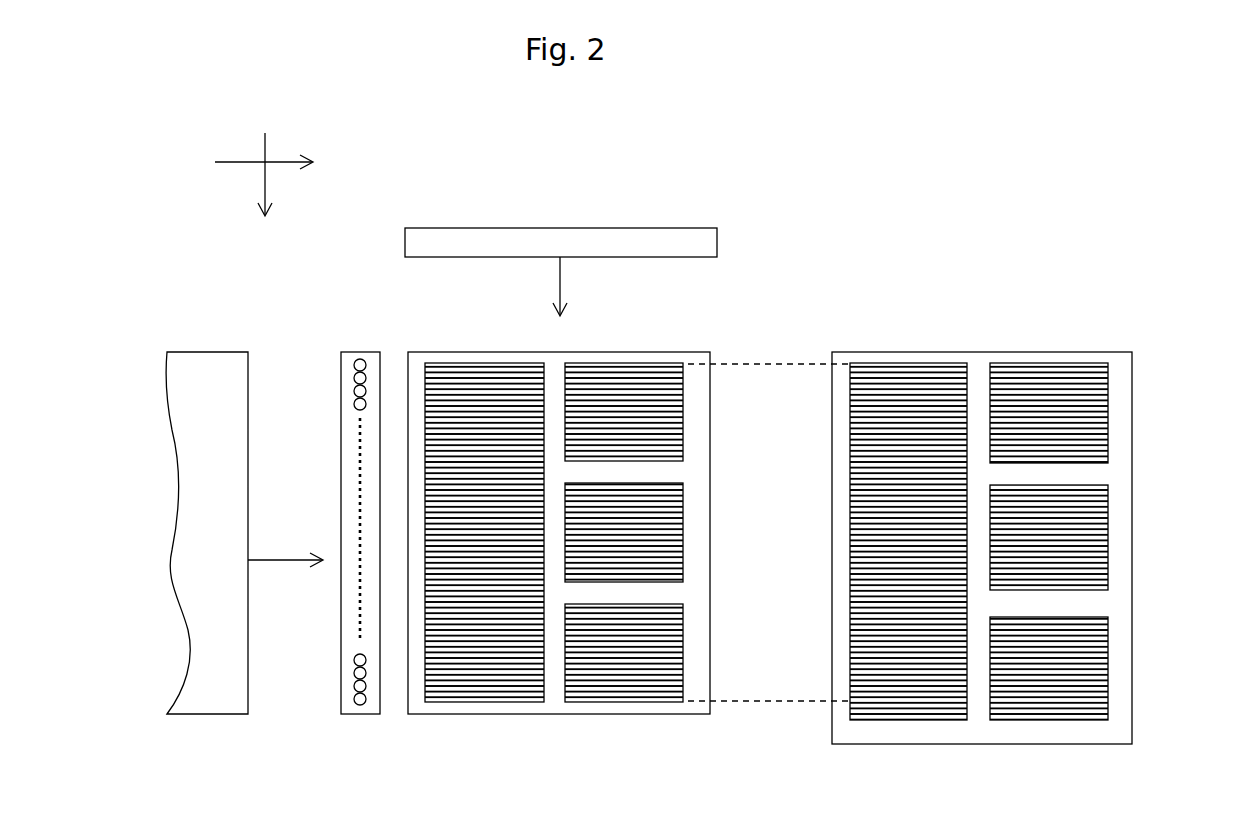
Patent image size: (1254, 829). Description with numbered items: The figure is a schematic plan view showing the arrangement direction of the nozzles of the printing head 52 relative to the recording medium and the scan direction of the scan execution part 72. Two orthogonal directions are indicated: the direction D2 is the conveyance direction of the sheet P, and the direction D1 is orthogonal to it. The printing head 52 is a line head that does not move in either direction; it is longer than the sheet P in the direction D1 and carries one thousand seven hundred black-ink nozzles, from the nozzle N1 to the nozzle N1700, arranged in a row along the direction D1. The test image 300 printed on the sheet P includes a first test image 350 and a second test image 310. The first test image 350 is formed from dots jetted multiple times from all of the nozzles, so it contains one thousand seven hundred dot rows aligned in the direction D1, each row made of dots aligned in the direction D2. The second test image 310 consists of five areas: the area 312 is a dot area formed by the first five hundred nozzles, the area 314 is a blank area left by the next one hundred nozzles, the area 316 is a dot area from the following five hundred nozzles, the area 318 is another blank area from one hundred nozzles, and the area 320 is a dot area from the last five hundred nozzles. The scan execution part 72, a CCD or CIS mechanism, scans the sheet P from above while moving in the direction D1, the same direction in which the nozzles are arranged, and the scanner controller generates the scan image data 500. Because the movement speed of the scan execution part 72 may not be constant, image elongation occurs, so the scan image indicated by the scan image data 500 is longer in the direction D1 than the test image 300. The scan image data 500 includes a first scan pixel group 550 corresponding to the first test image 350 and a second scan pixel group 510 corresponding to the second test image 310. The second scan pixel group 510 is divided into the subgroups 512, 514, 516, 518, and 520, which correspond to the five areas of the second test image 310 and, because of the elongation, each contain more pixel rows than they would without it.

The direction D1 is at (266, 148).
The direction D2 is at (238, 160).
The sheet P is at (234, 351).
The printing head 52 is at (337, 537).
The nozzle N1 is at (355, 367).
The nozzle N1700 is at (360, 706).
The scan execution part 72 is at (690, 228).
The test image 300 is at (634, 482).
The first test image 350 is at (548, 353).
The second test image 310 is at (674, 507).
The area 312 is at (697, 412).
The area 314 is at (698, 469).
The area 316 is at (696, 520).
The area 318 is at (692, 595).
The area 320 is at (695, 647).
The scan image data 500 is at (1019, 474).
The first scan pixel group 550 is at (972, 353).
The second scan pixel group 510 is at (1098, 516).
The subgroup 512 is at (1120, 413).
The subgroup 514 is at (1120, 470).
The subgroup 516 is at (1120, 520).
The subgroup 518 is at (1115, 602).
The subgroup 520 is at (1120, 655).